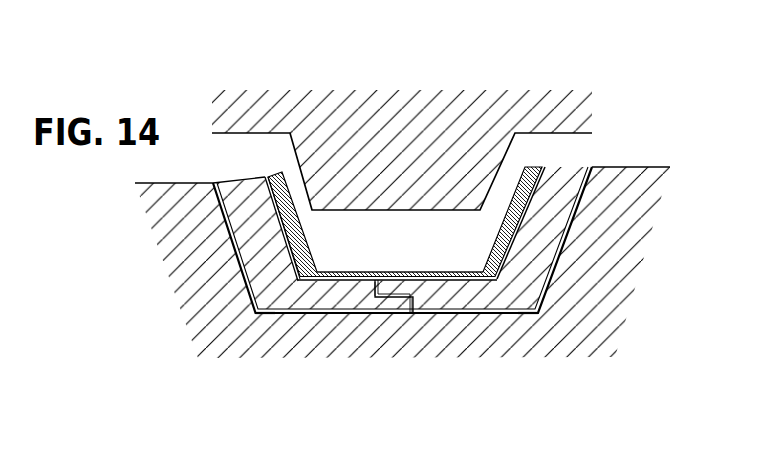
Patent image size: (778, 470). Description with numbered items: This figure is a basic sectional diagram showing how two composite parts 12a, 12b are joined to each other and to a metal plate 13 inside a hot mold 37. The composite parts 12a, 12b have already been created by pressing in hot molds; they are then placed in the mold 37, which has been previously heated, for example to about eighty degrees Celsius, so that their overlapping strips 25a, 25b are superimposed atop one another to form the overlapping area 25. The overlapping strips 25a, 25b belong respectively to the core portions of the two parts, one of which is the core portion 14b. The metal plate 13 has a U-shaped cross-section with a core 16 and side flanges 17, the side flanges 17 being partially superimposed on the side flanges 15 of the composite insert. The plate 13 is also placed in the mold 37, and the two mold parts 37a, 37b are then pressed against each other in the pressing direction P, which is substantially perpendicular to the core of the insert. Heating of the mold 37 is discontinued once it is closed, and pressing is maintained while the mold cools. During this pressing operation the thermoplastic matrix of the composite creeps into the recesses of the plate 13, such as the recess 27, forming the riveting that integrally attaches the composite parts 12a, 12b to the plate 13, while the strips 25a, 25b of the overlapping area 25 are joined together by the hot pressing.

The pressing direction P is at (398, 71).
The composite part 12a is at (541, 318).
The composite part 12b is at (251, 318).
The metal plate 13 is at (545, 158).
The core portion 14b is at (310, 297).
The side flange 15 is at (250, 223).
The core 16 is at (468, 272).
The side flange 17 is at (297, 254).
The protrusion 25 is at (397, 324).
The overlapping strip 25a is at (388, 286).
The overlapping strip 25b is at (411, 300).
The recess 27 is at (394, 247).
The hot mold 37 is at (665, 150).
The mold part 37a is at (632, 212).
The mold part 37b is at (578, 112).